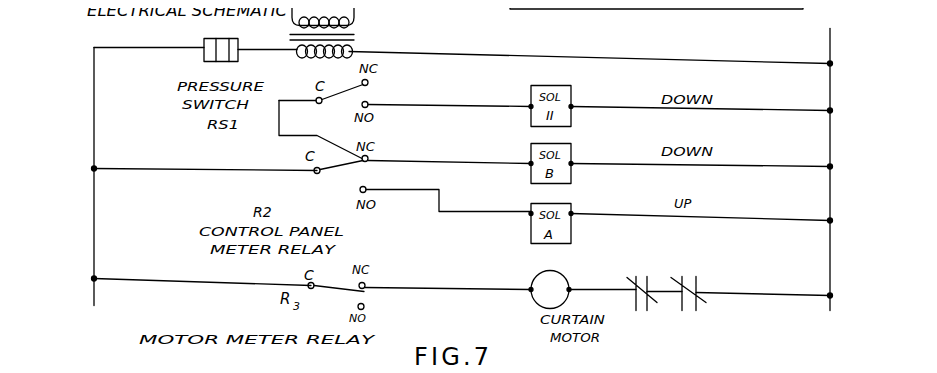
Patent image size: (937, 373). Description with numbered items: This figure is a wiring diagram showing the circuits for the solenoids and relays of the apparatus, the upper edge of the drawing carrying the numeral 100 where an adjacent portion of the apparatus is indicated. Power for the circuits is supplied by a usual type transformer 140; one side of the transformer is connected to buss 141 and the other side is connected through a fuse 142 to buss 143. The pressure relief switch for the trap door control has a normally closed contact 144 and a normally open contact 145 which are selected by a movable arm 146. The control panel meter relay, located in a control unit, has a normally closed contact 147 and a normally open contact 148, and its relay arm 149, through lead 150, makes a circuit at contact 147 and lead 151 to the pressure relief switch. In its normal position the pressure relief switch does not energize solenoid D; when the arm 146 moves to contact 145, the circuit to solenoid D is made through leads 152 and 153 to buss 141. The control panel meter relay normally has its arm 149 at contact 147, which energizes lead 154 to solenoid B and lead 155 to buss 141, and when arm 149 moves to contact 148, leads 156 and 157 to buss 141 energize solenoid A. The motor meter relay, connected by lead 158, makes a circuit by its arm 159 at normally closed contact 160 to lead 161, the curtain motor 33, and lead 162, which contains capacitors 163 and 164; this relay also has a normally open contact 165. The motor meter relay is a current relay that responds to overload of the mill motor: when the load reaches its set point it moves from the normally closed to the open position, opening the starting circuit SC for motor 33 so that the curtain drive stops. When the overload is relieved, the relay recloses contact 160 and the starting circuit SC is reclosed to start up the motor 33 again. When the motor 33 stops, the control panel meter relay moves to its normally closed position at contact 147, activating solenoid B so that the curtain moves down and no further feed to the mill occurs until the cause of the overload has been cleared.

The motor 33 is at (562, 287).
The control housing 100 is at (589, 12).
The transformer 140 is at (359, 40).
The buss 141 is at (833, 136).
The fuse 142 is at (205, 41).
The buss 143 is at (95, 133).
The normally closed contact 144 is at (369, 83).
The normally open contact 145 is at (369, 104).
The movable arm 146 is at (344, 100).
The normally closed contact 147 is at (369, 159).
The normally open contact 148 is at (367, 189).
The relay arm 149 is at (333, 179).
The lead 150 is at (182, 171).
The lead 151 is at (332, 137).
The lead 152 is at (462, 108).
The lead 153 is at (622, 95).
The lead 154 is at (462, 165).
The lead 155 is at (625, 166).
The lead 156 is at (468, 214).
The lead 157 is at (612, 216).
The lead 158 is at (158, 276).
The arm 159 is at (331, 286).
The normally closed contact 160 is at (366, 285).
The lead 161 is at (479, 277).
The lead 162 is at (745, 296).
The capacitor 163 is at (645, 276).
The capacitor 164 is at (690, 277).
The normally open contact 165 is at (365, 306).
The starting circuit SC is at (710, 304).